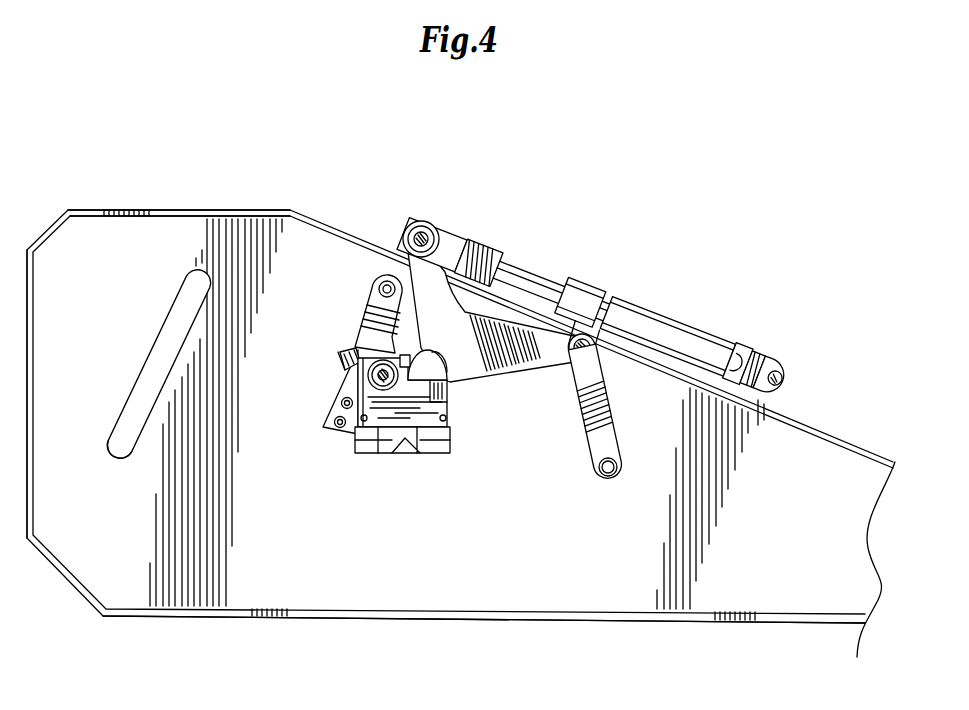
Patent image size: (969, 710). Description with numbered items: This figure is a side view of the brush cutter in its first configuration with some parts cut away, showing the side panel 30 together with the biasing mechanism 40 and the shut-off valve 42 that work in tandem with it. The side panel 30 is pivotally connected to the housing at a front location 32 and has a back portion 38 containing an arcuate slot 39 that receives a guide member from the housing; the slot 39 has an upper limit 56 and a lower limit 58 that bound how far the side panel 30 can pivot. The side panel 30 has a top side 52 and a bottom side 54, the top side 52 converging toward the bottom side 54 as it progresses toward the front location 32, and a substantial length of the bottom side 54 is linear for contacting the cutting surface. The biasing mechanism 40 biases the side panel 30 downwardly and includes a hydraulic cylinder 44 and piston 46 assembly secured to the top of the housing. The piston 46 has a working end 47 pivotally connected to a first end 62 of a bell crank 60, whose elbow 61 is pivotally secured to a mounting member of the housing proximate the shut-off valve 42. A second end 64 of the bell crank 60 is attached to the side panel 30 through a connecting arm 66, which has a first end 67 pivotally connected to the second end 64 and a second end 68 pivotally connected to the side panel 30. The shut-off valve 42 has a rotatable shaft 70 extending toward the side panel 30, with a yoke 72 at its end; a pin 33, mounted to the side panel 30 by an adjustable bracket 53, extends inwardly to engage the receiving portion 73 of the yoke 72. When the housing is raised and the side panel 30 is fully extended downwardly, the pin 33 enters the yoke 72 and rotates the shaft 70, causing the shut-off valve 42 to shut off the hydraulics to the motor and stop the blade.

The side panel 30 is at (86, 328).
The front location 32 is at (875, 571).
The pin 33 is at (386, 284).
The back portion 38 is at (23, 490).
The arcuate slot 39 is at (147, 360).
The biasing mechanism 40 is at (486, 214).
The shut-off valve 42 is at (410, 373).
The cylinder 44 is at (667, 327).
The piston 46 is at (530, 277).
The working end 47 is at (478, 234).
The top side 52 is at (168, 210).
The bracket 53 is at (343, 356).
The bottom side 54 is at (170, 617).
The upper limit 56 is at (210, 272).
The lower limit 58 is at (120, 450).
The bell crank 60 is at (520, 372).
The elbow 61 is at (463, 384).
The first end 62 is at (422, 238).
The second end 64 is at (594, 352).
The connecting arm 66 is at (581, 432).
The first end 67 is at (578, 320).
The second end 68 is at (614, 478).
The rotatable shaft 70 is at (418, 428).
The yoke 72 is at (327, 430).
The receiving portion 73 is at (356, 340).